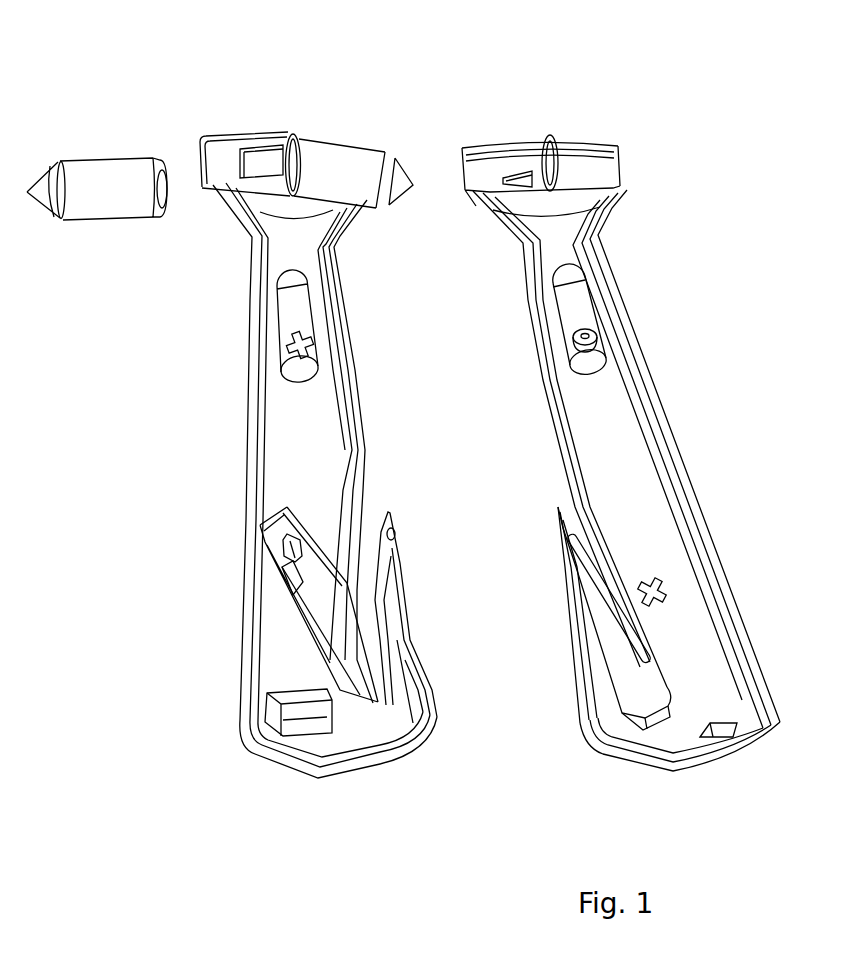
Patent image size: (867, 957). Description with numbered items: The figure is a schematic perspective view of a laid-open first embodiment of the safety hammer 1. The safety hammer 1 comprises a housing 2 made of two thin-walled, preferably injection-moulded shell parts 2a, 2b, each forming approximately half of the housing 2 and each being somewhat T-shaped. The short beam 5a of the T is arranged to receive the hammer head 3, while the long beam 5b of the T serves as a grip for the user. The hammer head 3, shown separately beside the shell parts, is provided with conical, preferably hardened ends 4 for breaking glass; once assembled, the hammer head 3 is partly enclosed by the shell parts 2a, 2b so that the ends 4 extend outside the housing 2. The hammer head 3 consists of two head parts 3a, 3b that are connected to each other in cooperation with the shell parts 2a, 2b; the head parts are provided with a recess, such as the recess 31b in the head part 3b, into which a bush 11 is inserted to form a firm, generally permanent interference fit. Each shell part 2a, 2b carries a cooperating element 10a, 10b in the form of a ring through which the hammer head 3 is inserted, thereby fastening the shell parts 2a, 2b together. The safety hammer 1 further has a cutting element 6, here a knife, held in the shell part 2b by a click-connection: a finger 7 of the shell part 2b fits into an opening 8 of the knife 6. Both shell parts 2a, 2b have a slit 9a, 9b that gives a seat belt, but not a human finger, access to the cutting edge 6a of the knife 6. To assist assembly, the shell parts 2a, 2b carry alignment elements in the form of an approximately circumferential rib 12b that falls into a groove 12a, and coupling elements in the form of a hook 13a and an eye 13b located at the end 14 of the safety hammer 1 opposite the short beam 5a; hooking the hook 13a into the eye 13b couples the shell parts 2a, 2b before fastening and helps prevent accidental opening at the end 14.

The safety hammer 1 is at (616, 82).
The housing 2 is at (672, 350).
The shell part 2a is at (683, 630).
The shell part 2b is at (292, 658).
The hammer head 3 is at (87, 244).
The head part 3a is at (348, 170).
The head part 3b is at (100, 180).
The recess 31b is at (161, 172).
The end 4 is at (37, 186).
The short beam 5a is at (660, 183).
The long beam 5b is at (720, 505).
The cutting element 6 is at (335, 616).
The cutting edge 6a is at (360, 627).
The finger 7 is at (288, 538).
The opening 8 is at (282, 555).
The slit 9a is at (560, 495).
The slit 9b is at (380, 500).
The cooperating element 10a is at (548, 135).
The cooperating element 10b is at (290, 135).
The bush 11 is at (251, 160).
The groove 12a is at (628, 740).
The rib 12b is at (396, 745).
The hook 13a is at (722, 742).
The eye 13b is at (302, 724).
The end 14 is at (220, 731).